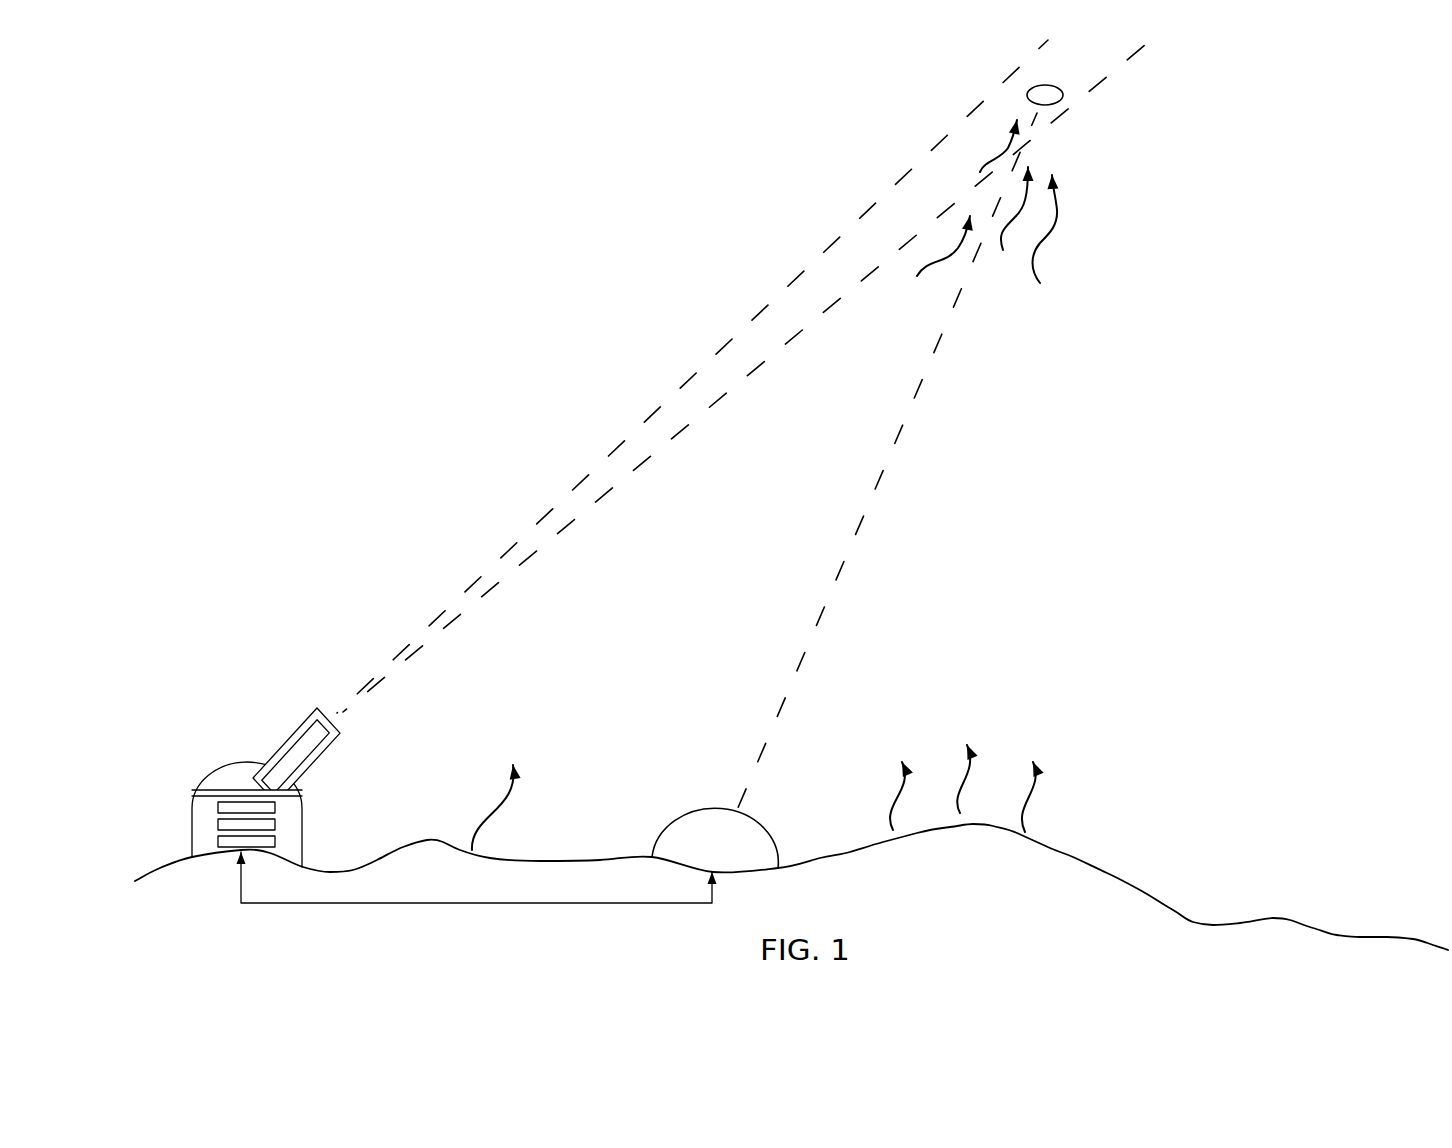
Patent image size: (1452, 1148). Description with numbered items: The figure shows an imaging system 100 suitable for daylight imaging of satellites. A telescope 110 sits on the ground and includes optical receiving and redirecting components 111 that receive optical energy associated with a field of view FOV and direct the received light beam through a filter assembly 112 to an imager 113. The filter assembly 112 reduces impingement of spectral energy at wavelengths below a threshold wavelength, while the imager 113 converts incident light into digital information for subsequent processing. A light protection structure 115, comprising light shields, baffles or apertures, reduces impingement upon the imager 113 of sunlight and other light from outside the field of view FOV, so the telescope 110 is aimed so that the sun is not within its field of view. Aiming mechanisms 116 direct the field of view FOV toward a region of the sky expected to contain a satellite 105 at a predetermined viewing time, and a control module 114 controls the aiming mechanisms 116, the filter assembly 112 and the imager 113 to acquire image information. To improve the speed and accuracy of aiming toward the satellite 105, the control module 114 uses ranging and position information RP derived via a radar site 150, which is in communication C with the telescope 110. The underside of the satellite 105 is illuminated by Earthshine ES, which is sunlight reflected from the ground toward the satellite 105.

The imaging system 100 is at (1016, 580).
The satellite 105 is at (1052, 86).
The telescope 110 is at (271, 785).
The optical receiving and redirecting components 111 is at (288, 755).
The filter assembly 112 is at (277, 806).
The imager 113 is at (277, 825).
The control module 114 is at (277, 841).
The light protection structure 115 is at (320, 738).
The aiming mechanisms 116 is at (200, 792).
The radar site 150 is at (757, 821).
The Earthshine ES is at (1043, 241).
The ranging and/or position information RP is at (860, 523).
The field of view FOV is at (717, 395).
The communication C is at (480, 903).